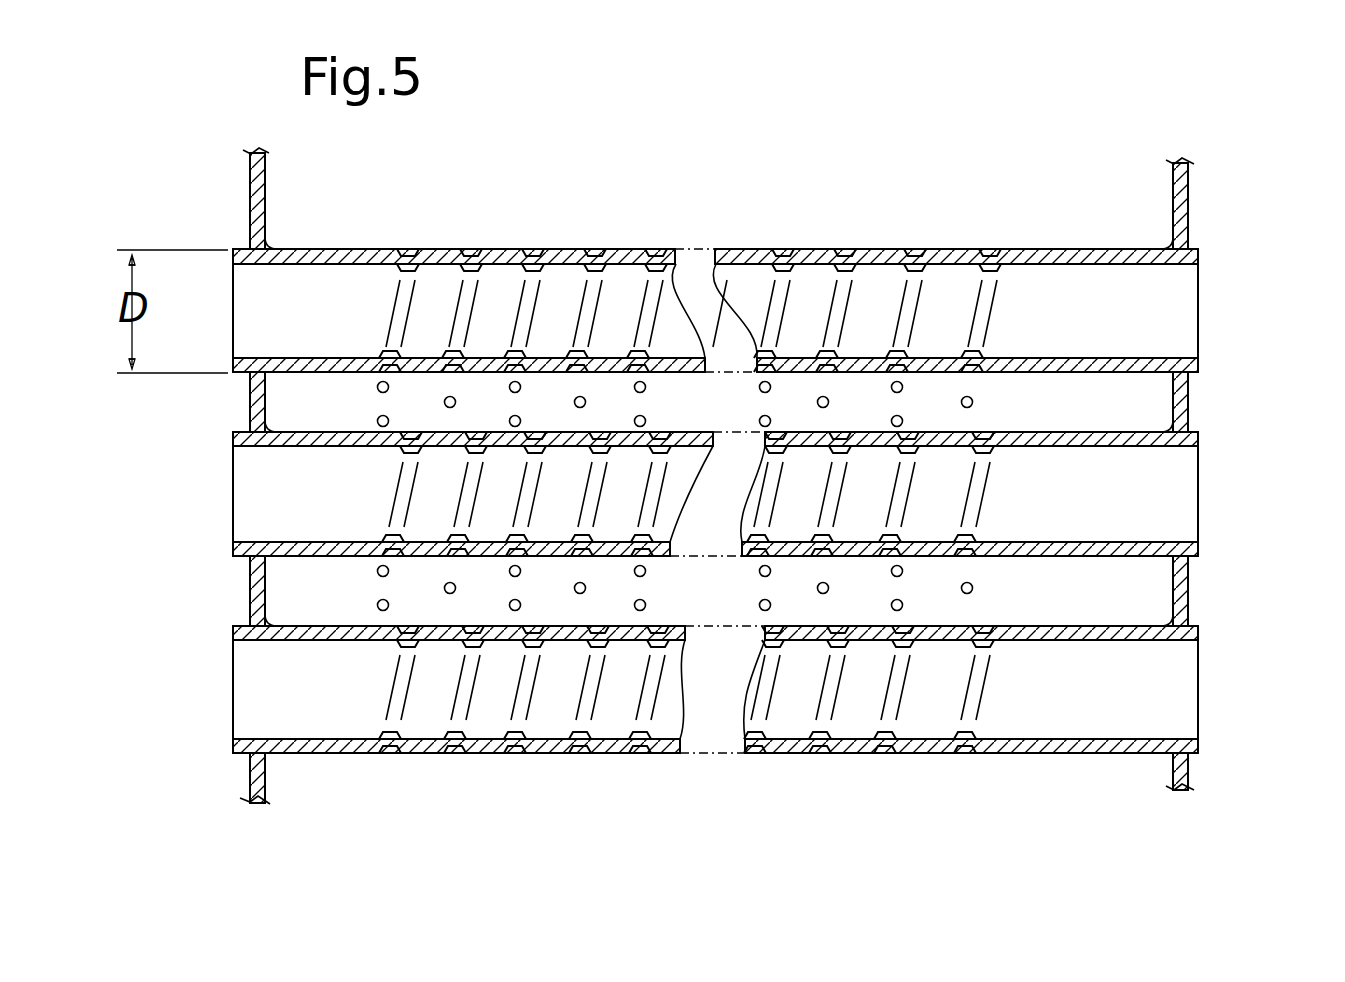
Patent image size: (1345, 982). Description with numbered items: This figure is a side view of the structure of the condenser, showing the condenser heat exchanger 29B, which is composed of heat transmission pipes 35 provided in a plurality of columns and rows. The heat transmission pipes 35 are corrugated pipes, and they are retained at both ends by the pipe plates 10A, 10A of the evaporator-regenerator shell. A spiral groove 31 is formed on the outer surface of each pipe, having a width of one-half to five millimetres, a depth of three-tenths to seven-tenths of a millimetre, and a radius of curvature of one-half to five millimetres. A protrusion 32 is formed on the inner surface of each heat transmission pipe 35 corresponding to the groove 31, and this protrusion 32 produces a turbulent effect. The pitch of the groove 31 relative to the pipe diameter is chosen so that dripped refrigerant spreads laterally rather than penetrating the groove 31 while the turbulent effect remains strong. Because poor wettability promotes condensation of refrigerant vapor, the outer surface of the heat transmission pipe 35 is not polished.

The condenser heat exchanger 29B is at (640, 232).
The spiral groove 31 is at (921, 252).
The protrusion 32 is at (960, 265).
The heat transmission pipe 35 is at (322, 250).
The pipe plate 10A is at (252, 582).